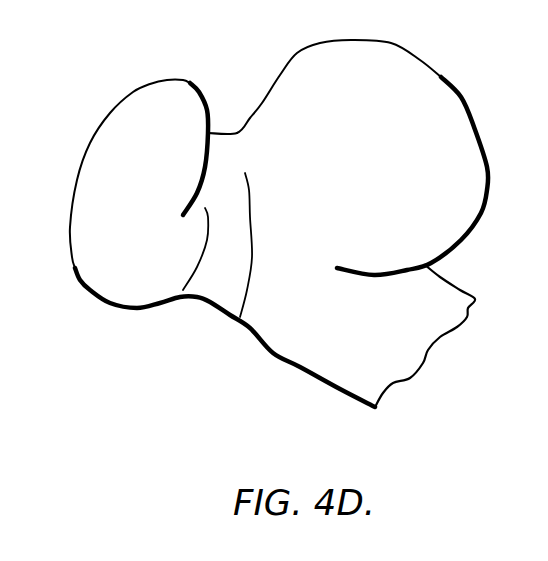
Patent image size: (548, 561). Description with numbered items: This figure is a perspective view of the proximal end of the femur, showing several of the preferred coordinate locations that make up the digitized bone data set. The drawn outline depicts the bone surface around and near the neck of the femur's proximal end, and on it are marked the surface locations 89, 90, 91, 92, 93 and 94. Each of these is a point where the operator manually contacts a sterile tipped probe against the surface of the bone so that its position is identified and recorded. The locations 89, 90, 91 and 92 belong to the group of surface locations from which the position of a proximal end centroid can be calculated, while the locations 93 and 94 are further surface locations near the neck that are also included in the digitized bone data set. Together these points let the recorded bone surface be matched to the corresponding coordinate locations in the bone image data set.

The surface location 89 is at (240, 317).
The surface location 90 is at (183, 290).
The surface location 91 is at (252, 148).
The surface location 92 is at (225, 152).
The surface location 93 is at (180, 145).
The surface location 94 is at (163, 200).